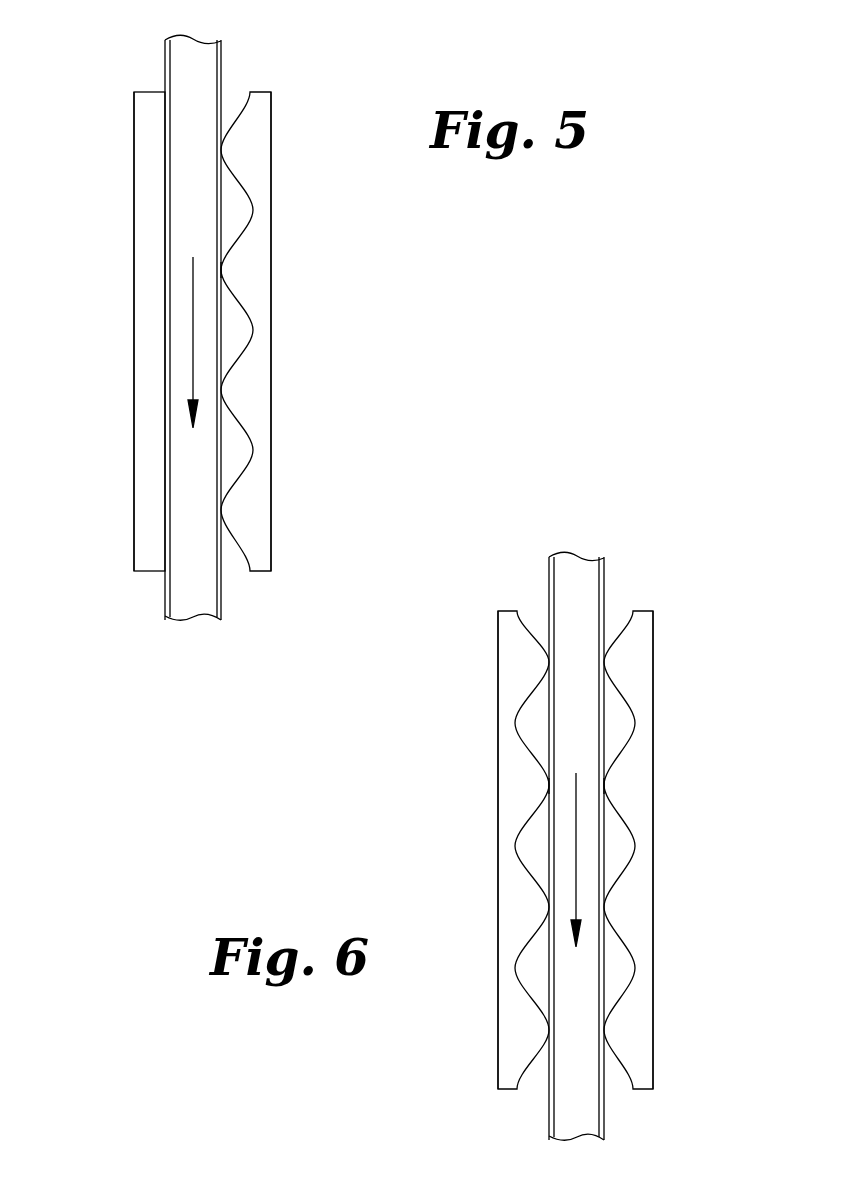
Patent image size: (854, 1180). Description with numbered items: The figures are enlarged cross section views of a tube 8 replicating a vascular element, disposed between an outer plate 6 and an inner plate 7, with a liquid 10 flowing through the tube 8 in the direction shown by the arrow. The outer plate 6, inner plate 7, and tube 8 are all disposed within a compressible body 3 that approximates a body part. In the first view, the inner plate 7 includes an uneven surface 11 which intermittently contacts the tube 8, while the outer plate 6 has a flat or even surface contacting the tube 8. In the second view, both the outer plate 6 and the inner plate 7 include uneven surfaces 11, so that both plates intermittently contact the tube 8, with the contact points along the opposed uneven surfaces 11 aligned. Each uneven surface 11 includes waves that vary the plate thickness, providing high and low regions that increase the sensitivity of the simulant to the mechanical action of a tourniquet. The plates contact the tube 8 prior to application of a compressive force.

In FIG. 5, the compressible body 3 is at (294, 156).
In FIG. 6, the compressible body 3 is at (677, 679).
In FIG. 5, the outer plate 6 is at (134, 193).
In FIG. 6, the outer plate 6 is at (517, 675).
In FIG. 5, the inner plate 7 is at (252, 390).
In FIG. 6, the inner plate 7 is at (633, 906).
In FIG. 5, the tube 8 is at (221, 65).
In FIG. 6, the tube 8 is at (604, 585).
In FIG. 5, the liquid 10 is at (173, 212).
In FIG. 6, the liquid 10 is at (558, 733).
In FIG. 5, the uneven surface 11 is at (221, 270).
In FIG. 6, the uneven surface 11 is at (604, 787).